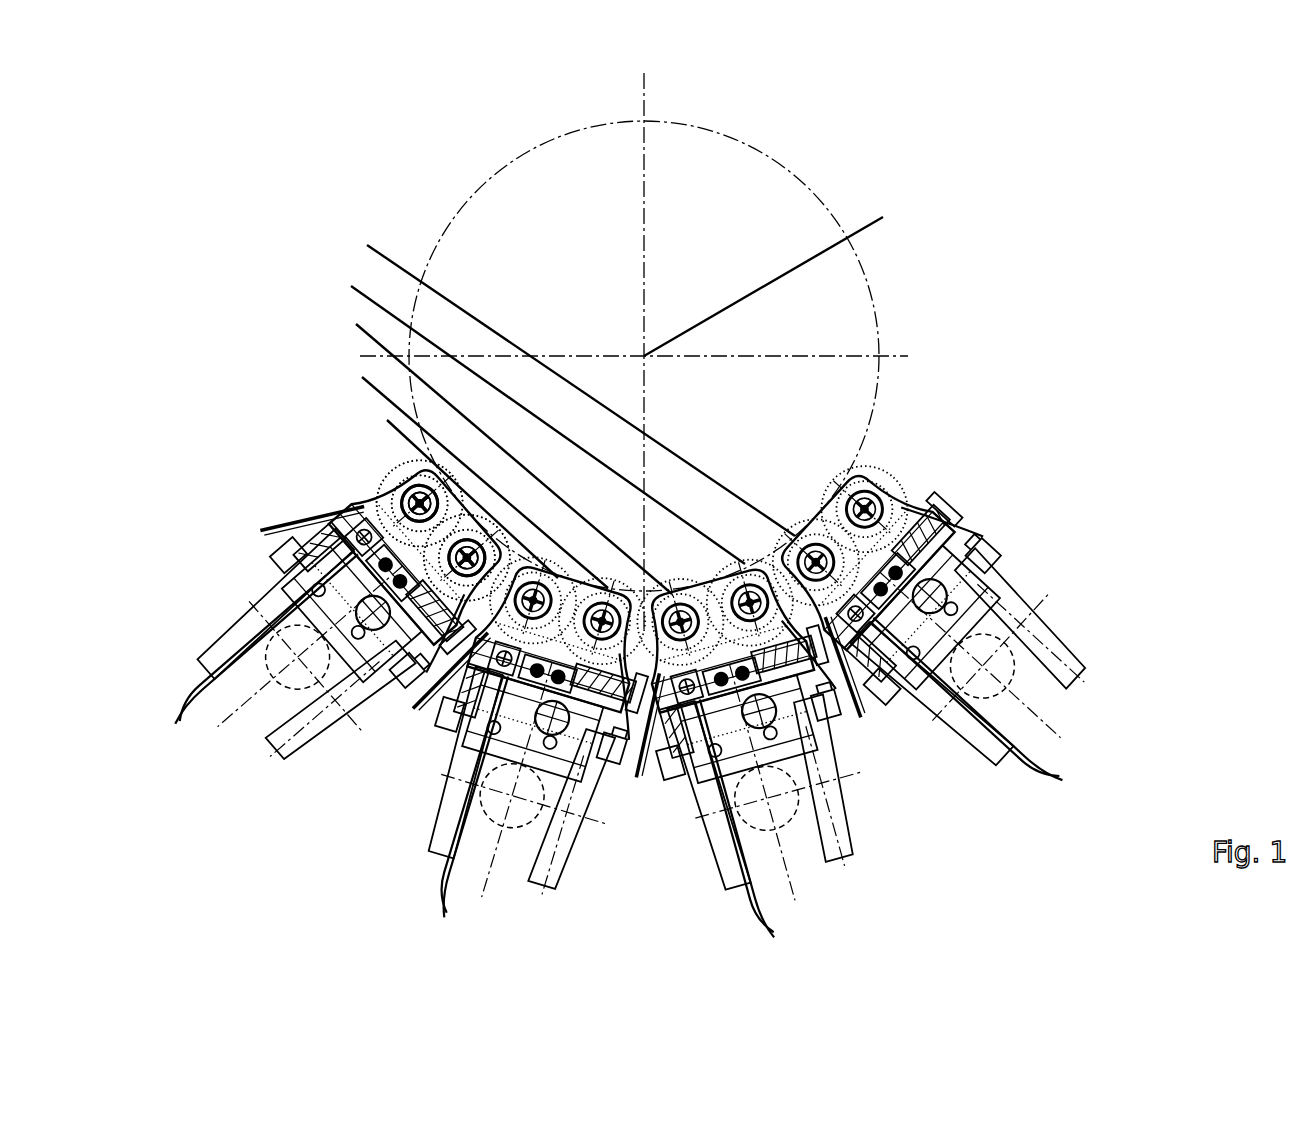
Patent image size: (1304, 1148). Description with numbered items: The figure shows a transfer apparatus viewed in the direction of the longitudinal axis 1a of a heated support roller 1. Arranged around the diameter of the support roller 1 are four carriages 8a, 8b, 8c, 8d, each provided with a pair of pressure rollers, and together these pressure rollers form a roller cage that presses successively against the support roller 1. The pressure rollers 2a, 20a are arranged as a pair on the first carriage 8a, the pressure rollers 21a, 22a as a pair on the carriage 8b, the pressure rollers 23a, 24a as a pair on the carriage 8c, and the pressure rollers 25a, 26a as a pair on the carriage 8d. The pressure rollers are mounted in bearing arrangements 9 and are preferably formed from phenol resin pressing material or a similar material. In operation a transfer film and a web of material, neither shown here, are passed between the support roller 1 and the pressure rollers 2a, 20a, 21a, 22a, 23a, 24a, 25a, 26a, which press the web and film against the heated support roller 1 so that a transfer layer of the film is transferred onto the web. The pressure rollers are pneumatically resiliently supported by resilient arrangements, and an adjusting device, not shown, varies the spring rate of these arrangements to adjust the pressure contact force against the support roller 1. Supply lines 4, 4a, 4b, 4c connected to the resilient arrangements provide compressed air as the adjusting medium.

The support roller 1 is at (843, 329).
The longitudinal axis 1a is at (783, 278).
The pressure roller 2a is at (880, 475).
The supply line 4 is at (862, 715).
The supply line 4a is at (643, 700).
The supply line 4b is at (457, 643).
The supply line 4c is at (330, 643).
The carriage 8a is at (1032, 638).
The carriage 8b is at (830, 822).
The carriage 8c is at (555, 840).
The carriage 8d is at (297, 733).
The bearing arrangement 9 is at (905, 500).
The pressure roller 20a is at (557, 381).
The pressure roller 21a is at (526, 418).
The pressure roller 22a is at (490, 450).
The pressure roller 23a is at (462, 472).
The pressure roller 24a is at (448, 490).
The pressure roller 25a is at (390, 501).
The pressure roller 26a is at (420, 472).